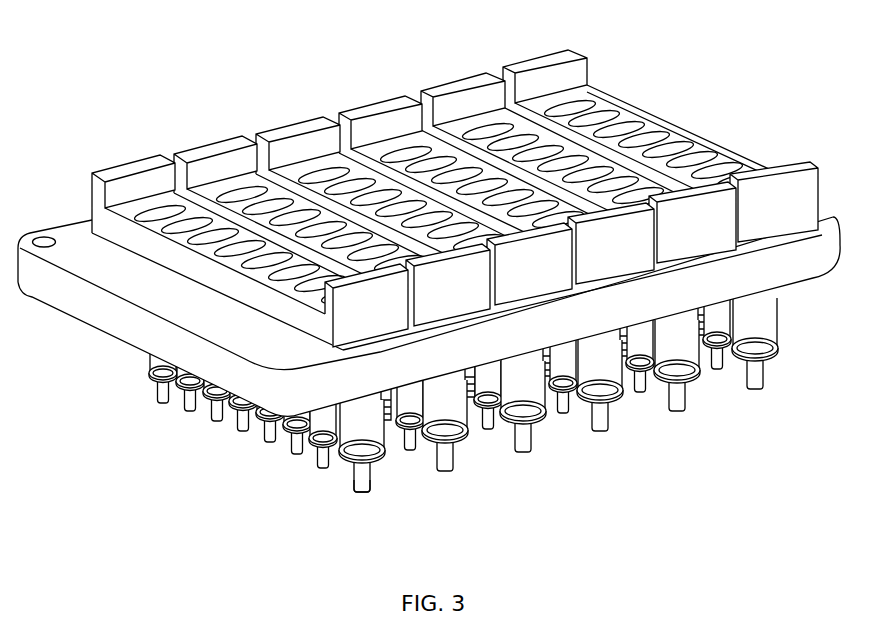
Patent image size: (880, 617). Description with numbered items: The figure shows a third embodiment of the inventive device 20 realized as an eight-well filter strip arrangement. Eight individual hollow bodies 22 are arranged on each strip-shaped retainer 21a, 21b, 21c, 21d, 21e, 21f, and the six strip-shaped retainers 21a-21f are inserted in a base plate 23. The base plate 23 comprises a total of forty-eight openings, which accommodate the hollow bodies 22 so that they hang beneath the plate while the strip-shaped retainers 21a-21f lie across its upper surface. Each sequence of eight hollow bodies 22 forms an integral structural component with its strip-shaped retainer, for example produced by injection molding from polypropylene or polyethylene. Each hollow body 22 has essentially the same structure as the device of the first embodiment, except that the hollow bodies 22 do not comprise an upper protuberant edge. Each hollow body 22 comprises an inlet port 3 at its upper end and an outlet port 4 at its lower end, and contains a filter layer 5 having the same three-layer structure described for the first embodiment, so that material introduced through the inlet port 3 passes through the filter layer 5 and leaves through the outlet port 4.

The device 20 is at (429, 294).
The strip-shaped retainer 21a is at (349, 330).
The strip-shaped retainer 21b is at (437, 307).
The strip-shaped retainer 21c is at (516, 285).
The strip-shaped retainer 21d is at (601, 264).
The strip-shaped retainer 21e is at (684, 246).
The strip-shaped retainer 21f is at (763, 222).
The base plate 23 is at (573, 334).
The inlet port 3 is at (455, 243).
The hollow body 22 is at (363, 482).
The filter layer 5 is at (386, 508).
The outlet port 4 is at (363, 498).